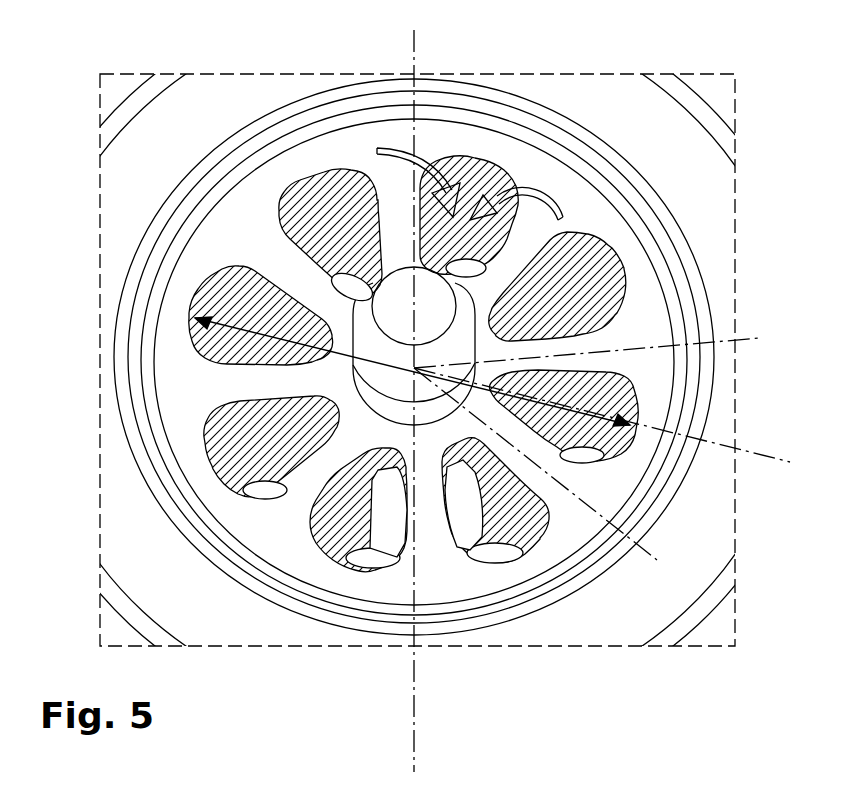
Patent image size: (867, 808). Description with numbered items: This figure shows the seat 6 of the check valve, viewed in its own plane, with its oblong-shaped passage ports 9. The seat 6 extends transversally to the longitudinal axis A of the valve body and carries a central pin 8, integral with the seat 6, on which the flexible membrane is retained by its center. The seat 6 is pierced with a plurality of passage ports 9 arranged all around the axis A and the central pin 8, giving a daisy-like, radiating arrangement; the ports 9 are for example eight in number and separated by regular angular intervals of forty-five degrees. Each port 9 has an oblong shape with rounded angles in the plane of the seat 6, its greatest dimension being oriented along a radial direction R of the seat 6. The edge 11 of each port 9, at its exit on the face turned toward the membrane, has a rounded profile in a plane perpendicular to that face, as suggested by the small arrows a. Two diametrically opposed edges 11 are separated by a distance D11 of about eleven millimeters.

The seat 6 is at (642, 282).
The central pin 8 is at (433, 404).
The passage ports 9 is at (367, 560).
The edge 11 is at (325, 330).
The distance D11 is at (373, 349).
The longitudinal axis A is at (395, 233).
The small arrows a is at (421, 153).
The radial direction R is at (763, 453).